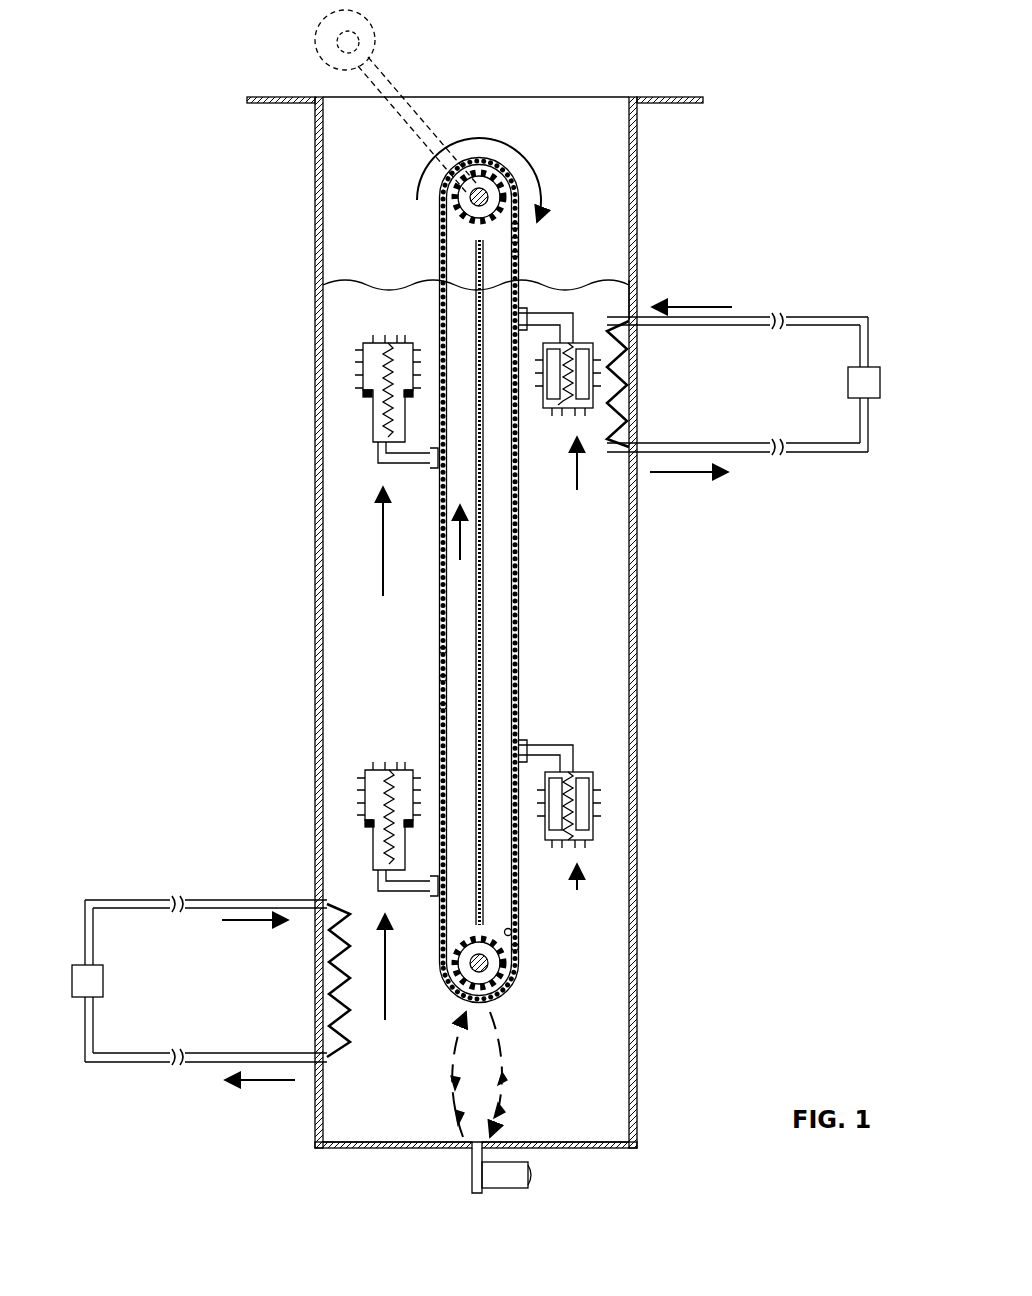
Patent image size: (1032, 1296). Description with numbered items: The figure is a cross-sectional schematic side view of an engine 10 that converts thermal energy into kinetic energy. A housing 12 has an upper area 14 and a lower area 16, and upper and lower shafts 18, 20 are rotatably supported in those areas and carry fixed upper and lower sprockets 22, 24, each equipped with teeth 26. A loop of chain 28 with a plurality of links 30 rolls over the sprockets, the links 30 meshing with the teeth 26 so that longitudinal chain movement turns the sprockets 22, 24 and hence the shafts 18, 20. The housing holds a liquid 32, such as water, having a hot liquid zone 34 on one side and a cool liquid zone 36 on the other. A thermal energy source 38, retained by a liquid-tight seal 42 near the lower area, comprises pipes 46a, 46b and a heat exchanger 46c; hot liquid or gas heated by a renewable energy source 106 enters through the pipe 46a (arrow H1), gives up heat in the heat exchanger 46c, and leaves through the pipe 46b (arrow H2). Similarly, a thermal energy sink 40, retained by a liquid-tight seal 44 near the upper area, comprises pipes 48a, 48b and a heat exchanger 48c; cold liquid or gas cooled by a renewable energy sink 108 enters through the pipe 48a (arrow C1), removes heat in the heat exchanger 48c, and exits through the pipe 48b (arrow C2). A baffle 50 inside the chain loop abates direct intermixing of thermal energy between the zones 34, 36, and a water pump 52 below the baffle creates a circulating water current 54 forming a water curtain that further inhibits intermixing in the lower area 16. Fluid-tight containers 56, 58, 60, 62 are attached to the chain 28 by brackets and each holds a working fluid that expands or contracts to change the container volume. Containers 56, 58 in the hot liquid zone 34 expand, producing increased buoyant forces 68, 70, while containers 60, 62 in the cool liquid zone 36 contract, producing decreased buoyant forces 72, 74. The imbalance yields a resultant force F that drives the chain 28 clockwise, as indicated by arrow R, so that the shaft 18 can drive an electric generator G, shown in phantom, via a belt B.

The engine 10 is at (254, 70).
The housing 12 is at (643, 218).
The upper area 14 is at (640, 298).
The lower area 16 is at (398, 1125).
The upper shaft 18 is at (490, 190).
The lower shaft 20 is at (494, 975).
The upper sprocket 22 is at (448, 199).
The lower sprocket 24 is at (466, 985).
The teeth 26 is at (517, 226).
The chain 28 is at (522, 652).
The links 30 is at (438, 650).
The liquid 32 is at (355, 300).
The hot liquid zone 34 is at (370, 671).
The cool liquid zone 36 is at (608, 683).
The thermal energy source 38 is at (232, 895).
The thermal energy sink 40 is at (812, 305).
The liquid-tight seal 42 is at (318, 978).
The liquid-tight seal 44 is at (640, 386).
The pipe 46a is at (262, 900).
The pipe 46b is at (215, 1062).
The heat exchanger 46c is at (356, 920).
The pipe 48a is at (748, 316).
The pipe 48b is at (748, 452).
The heat exchanger 48c is at (632, 430).
The baffle 50 is at (485, 715).
The water pump 52 is at (533, 1183).
The circulating water current 54 is at (453, 1045).
The container 56 is at (343, 798).
The container 58 is at (343, 378).
The container 60 is at (600, 368).
The container 62 is at (607, 800).
The buoyant force 68 is at (383, 981).
The buoyant force 70 is at (384, 556).
The buoyant force 72 is at (578, 477).
The buoyant force 74 is at (578, 903).
The renewable energy source 106 is at (105, 980).
The renewable energy sink 108 is at (848, 382).
The electric generator G is at (376, 42).
The belt B is at (398, 81).
The arrow R is at (466, 137).
The resultant force F is at (458, 532).
The arrow C1 is at (692, 293).
The arrow C2 is at (689, 487).
The arrow H1 is at (255, 933).
The arrow H2 is at (260, 1095).